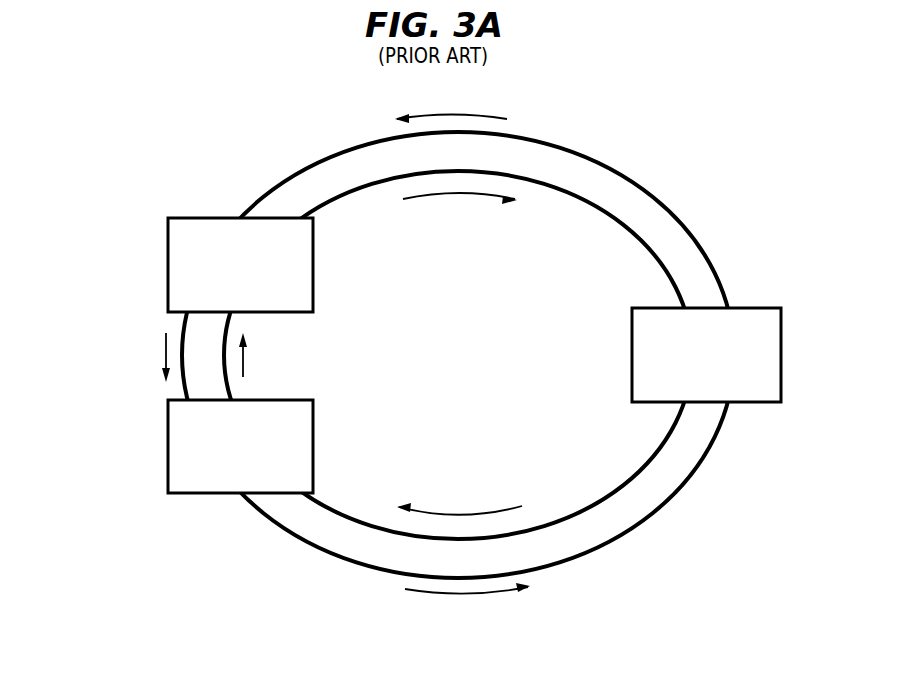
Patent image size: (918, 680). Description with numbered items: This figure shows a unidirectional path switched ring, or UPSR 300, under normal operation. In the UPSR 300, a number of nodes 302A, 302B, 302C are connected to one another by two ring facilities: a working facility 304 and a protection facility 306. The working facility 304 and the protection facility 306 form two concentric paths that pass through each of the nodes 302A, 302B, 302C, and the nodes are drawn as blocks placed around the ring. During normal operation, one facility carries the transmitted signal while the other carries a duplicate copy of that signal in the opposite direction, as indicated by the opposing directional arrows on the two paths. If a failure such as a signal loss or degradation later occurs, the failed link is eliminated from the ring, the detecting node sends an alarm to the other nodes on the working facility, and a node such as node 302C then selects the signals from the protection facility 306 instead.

The UPSR 300 is at (439, 335).
The node 302A is at (190, 218).
The node 302B is at (767, 308).
The node 302C is at (168, 457).
The working facility 304 is at (615, 222).
The protection facility 306 is at (617, 172).